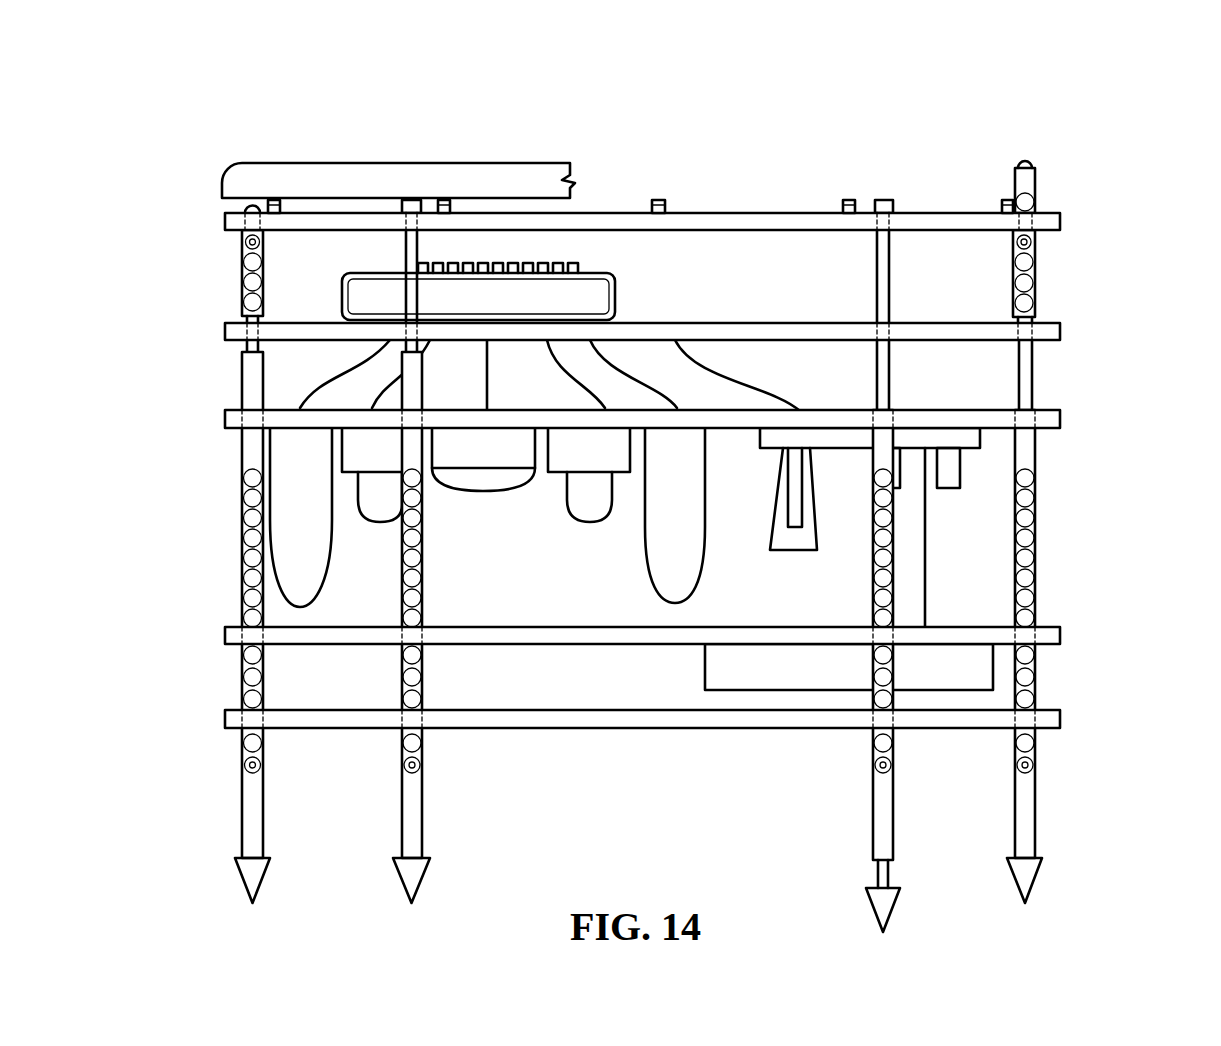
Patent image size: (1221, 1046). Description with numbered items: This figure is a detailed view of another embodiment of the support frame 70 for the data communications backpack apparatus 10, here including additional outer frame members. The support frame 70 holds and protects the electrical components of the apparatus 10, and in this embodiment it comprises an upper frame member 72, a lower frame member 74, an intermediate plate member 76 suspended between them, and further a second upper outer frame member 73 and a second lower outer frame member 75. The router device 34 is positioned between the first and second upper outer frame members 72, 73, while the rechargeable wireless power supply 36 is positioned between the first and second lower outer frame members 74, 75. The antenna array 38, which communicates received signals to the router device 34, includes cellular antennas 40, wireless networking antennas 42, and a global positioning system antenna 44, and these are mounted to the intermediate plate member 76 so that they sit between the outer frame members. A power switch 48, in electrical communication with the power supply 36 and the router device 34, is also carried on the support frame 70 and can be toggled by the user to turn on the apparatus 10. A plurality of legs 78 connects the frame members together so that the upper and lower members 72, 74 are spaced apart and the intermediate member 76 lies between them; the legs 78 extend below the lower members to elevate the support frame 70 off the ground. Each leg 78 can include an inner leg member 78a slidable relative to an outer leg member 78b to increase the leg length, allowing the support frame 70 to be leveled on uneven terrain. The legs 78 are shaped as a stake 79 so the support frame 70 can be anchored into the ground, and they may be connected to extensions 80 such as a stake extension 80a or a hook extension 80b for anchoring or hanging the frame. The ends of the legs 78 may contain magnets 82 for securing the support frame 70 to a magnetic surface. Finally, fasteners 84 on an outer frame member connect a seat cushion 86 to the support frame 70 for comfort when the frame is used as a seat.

The apparatus 10 is at (1127, 113).
The router device 34 is at (612, 292).
The rechargeable wireless power supply 36 is at (992, 673).
The antenna array 38 is at (245, 458).
The cellular antenna 40 is at (288, 548).
The wireless networking antenna 42 is at (383, 513).
The global positioning system antenna 44 is at (490, 477).
The power switch 48 is at (803, 463).
The support frame 70 is at (1097, 452).
The upper frame member 72 is at (1055, 332).
The second upper outer frame member 73 is at (1055, 222).
The lower frame member 74 is at (1050, 636).
The second lower outer frame member 75 is at (1055, 718).
The intermediate plate member 76 is at (1055, 418).
The legs 78 is at (1030, 823).
The inner leg member 78a is at (1038, 283).
The outer leg member 78b is at (887, 833).
The stake 79 is at (413, 867).
The extensions 80 is at (1038, 183).
The stake extension 80a is at (883, 902).
The hook extension 80b is at (1028, 160).
The magnets 82 is at (410, 200).
The fasteners 84 is at (276, 200).
The seat cushion 86 is at (505, 182).